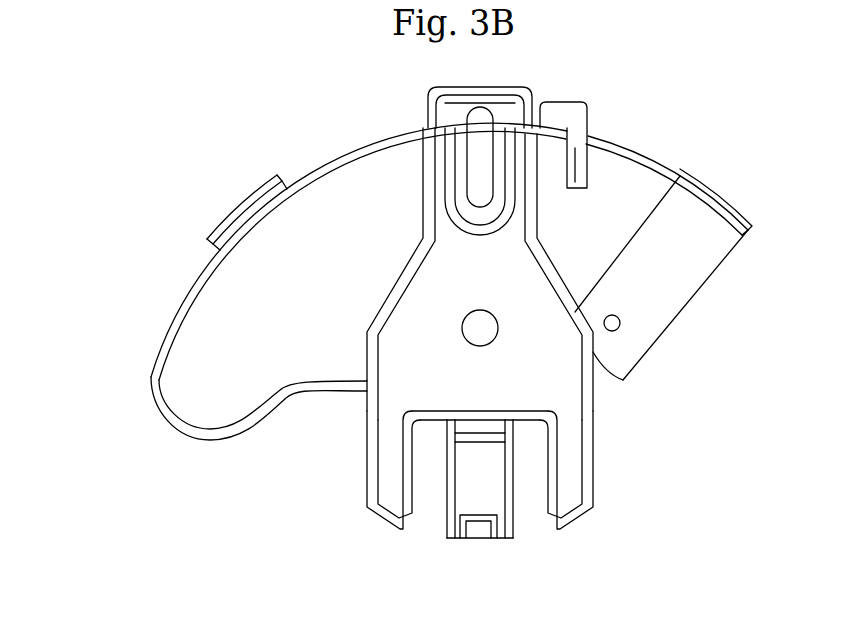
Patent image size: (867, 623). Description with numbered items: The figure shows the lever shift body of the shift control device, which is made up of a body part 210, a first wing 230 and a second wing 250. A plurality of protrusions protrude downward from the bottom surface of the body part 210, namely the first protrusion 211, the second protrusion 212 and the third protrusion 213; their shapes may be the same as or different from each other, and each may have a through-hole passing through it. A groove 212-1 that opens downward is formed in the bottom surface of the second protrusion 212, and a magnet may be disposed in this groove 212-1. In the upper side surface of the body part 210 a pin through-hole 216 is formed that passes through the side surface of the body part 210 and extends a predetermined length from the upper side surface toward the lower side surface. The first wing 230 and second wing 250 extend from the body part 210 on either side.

The body part 210 is at (560, 363).
The first protrusion 211 is at (387, 473).
The second protrusion 212 is at (490, 485).
The groove 212-1 is at (478, 530).
The third protrusion 213 is at (570, 468).
The pin through-hole 216 is at (471, 161).
The first wing 230 is at (222, 303).
The second wing 250 is at (632, 183).